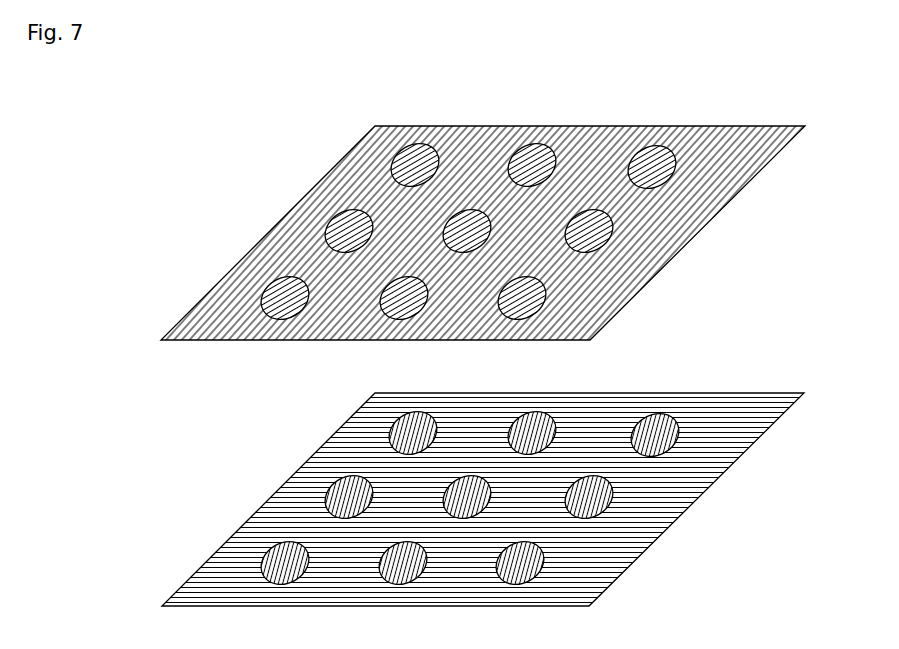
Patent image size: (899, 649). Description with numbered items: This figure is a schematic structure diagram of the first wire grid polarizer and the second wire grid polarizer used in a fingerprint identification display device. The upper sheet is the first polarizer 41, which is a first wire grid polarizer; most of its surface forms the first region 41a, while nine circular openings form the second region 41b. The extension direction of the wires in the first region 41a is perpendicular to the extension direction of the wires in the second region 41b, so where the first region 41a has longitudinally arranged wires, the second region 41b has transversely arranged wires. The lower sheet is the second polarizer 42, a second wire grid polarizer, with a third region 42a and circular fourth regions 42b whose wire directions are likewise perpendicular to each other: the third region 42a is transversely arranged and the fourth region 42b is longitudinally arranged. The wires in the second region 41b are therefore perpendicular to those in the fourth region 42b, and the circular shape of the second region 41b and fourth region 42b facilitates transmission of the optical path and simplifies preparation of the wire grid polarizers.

The first polarizer 41 is at (483, 207).
The first region 41a is at (717, 155).
The second region 41b is at (663, 143).
The second polarizer 42 is at (483, 474).
The third region 42a is at (733, 423).
The fourth region 42b is at (658, 420).